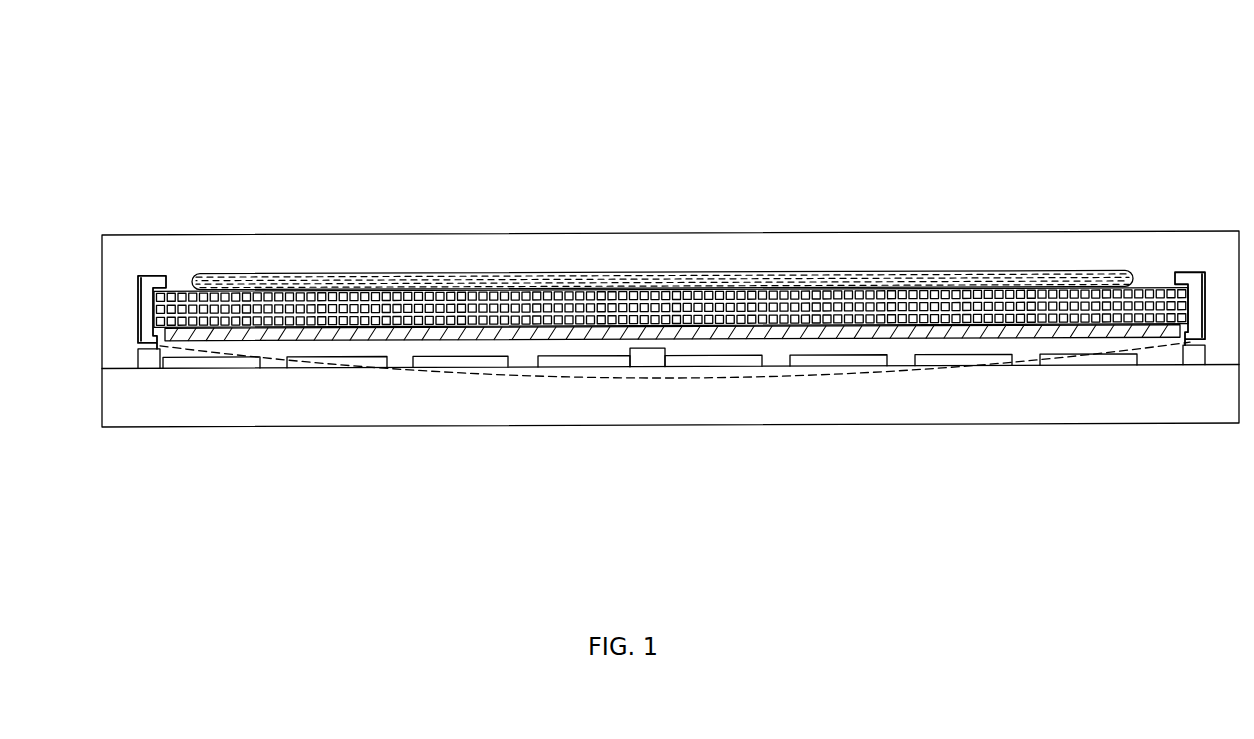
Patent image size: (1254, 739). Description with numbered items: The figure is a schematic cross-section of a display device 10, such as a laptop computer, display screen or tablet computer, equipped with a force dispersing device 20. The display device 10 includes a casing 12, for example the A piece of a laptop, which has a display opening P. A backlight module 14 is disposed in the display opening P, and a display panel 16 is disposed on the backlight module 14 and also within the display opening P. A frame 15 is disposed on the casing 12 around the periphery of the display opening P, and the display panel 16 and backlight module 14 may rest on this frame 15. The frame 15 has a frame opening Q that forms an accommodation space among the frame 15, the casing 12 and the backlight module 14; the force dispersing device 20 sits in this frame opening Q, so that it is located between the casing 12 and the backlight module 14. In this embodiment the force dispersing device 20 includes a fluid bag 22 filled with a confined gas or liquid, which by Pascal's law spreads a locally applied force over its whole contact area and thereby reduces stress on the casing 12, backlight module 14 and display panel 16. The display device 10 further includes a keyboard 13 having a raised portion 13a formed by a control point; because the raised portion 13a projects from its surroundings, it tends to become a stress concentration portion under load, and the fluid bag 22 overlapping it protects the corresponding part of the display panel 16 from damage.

The display device 10 is at (231, 47).
The casing 12 is at (810, 253).
The keyboard 13 is at (478, 362).
The raised portion 13a is at (645, 357).
The backlight module 14 is at (398, 305).
The frame 15 is at (153, 283).
The display panel 16 is at (403, 340).
The force dispersing device 20 is at (662, 217).
The fluid bag 22 is at (558, 282).
The display opening P is at (845, 382).
The frame opening Q is at (1152, 278).